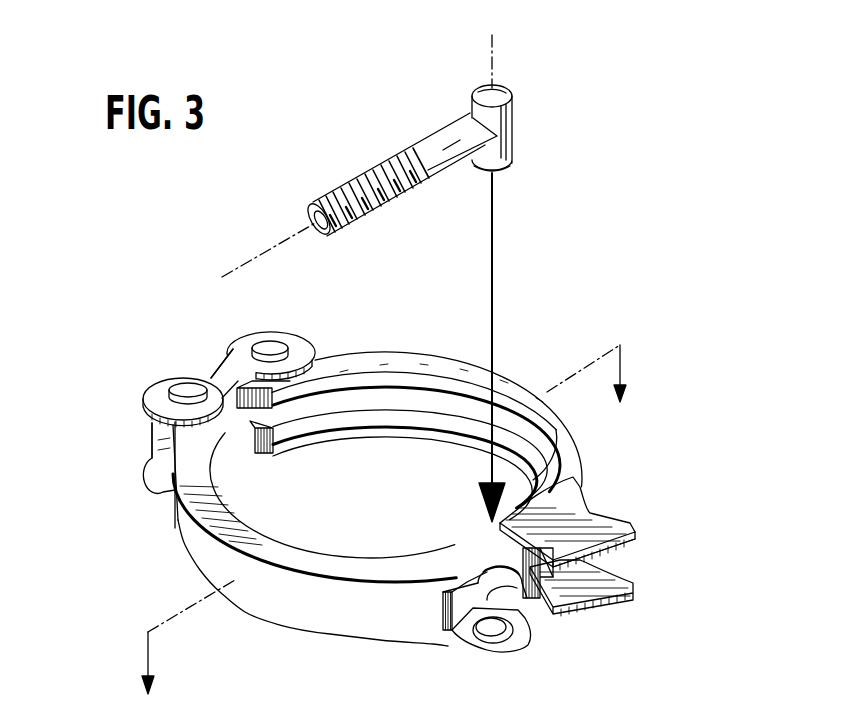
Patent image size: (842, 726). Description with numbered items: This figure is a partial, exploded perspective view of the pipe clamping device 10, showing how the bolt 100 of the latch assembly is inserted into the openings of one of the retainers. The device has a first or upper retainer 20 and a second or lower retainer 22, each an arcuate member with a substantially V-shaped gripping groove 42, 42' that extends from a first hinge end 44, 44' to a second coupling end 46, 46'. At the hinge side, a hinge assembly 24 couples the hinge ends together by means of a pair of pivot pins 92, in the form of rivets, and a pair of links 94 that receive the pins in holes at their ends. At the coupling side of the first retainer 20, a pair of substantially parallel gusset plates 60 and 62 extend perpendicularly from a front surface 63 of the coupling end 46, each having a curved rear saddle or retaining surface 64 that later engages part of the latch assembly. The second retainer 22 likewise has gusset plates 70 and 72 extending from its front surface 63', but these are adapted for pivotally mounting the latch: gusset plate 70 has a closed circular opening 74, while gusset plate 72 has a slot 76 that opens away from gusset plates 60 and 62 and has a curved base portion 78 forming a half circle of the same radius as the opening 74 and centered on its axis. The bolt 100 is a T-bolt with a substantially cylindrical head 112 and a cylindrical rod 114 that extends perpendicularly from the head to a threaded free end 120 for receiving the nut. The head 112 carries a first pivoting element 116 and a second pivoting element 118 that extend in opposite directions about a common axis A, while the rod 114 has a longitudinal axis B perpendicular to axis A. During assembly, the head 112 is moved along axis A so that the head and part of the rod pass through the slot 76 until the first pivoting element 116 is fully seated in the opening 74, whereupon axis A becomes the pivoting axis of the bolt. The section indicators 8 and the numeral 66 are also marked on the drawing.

The pipe clamping device 10 is at (85, 350).
The first retainer 20 is at (413, 353).
The second retainer 22 is at (190, 552).
The hinge assembly 24 is at (258, 320).
The gripping groove 42 is at (416, 441).
The gripping groove 42' is at (358, 492).
The first hinge end 44 is at (295, 347).
The first hinge end 44' is at (143, 453).
The second coupling end 46 is at (567, 494).
The second coupling end 46' is at (438, 553).
The gusset plate 60 is at (633, 593).
The gusset plate 62 is at (617, 542).
The front surface 63 is at (568, 614).
The front surface 63' is at (407, 611).
The curved retaining surface 64 is at (607, 522).
The latch legs 66 is at (578, 562).
The gusset plate 70 is at (503, 650).
The gusset plate 72 is at (530, 577).
The opening 74 is at (480, 627).
The slot 76 is at (455, 585).
The curved base portion 78 is at (493, 563).
The pivot pin 92 is at (280, 343).
The link 94 is at (213, 382).
The bolt 100 is at (438, 118).
The head 112 is at (522, 127).
The rod 114 is at (400, 204).
The first pivoting element 116 is at (500, 167).
The second pivoting element 118 is at (500, 92).
The threaded free end 120 is at (340, 187).
The axis A is at (497, 48).
The longitudinal axis B is at (245, 262).
The section line 8- 8 is at (383, 529).